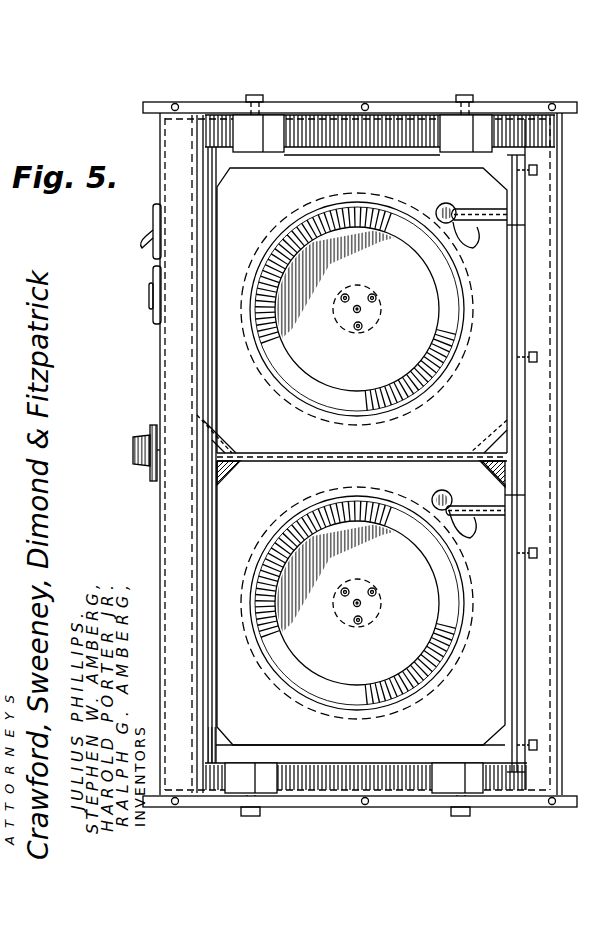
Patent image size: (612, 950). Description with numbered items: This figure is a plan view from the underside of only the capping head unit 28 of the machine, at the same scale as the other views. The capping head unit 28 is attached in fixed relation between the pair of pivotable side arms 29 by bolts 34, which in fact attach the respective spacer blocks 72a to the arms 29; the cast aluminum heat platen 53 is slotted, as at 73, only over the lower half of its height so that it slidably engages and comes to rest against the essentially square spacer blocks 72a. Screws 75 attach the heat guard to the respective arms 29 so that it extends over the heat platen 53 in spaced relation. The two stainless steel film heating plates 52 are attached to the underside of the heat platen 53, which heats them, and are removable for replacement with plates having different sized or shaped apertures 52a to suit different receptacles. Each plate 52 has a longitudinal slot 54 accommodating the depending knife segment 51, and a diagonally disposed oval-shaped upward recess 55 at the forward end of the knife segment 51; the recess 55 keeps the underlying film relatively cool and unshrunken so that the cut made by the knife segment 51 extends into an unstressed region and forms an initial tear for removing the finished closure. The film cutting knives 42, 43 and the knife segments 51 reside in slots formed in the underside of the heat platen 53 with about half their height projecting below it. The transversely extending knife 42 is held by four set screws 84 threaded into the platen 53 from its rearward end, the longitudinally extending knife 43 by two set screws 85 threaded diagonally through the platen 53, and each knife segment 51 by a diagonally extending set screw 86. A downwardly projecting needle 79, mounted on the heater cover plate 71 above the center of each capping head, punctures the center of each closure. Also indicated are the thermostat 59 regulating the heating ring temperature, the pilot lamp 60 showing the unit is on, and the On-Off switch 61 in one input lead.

The capping head unit 28 is at (563, 748).
The side arms 29 is at (316, 102).
The bolts 34 is at (255, 95).
The transversely extending knife 42 is at (514, 290).
The longitudinally extending knife 43 is at (304, 453).
The knife segment 51 is at (440, 211).
The film heating plate 52 is at (243, 389).
The apertures 52a is at (418, 374).
The heat platen 53 is at (352, 758).
The longitudinal slot 54 is at (493, 208).
The oval-shaped upward recess 55 is at (466, 247).
The thermostat 59 is at (133, 455).
The pilot lamp 60 is at (149, 300).
The On-Off switch 61 is at (153, 248).
The heater cover plate 71 is at (363, 358).
The spacer blocks 72a is at (246, 152).
The slots 73 is at (275, 152).
The screws 75 is at (178, 102).
The needle 79 is at (361, 310).
The set screws 84 is at (534, 175).
The set screws 85 is at (203, 456).
The set screw 86 is at (514, 226).